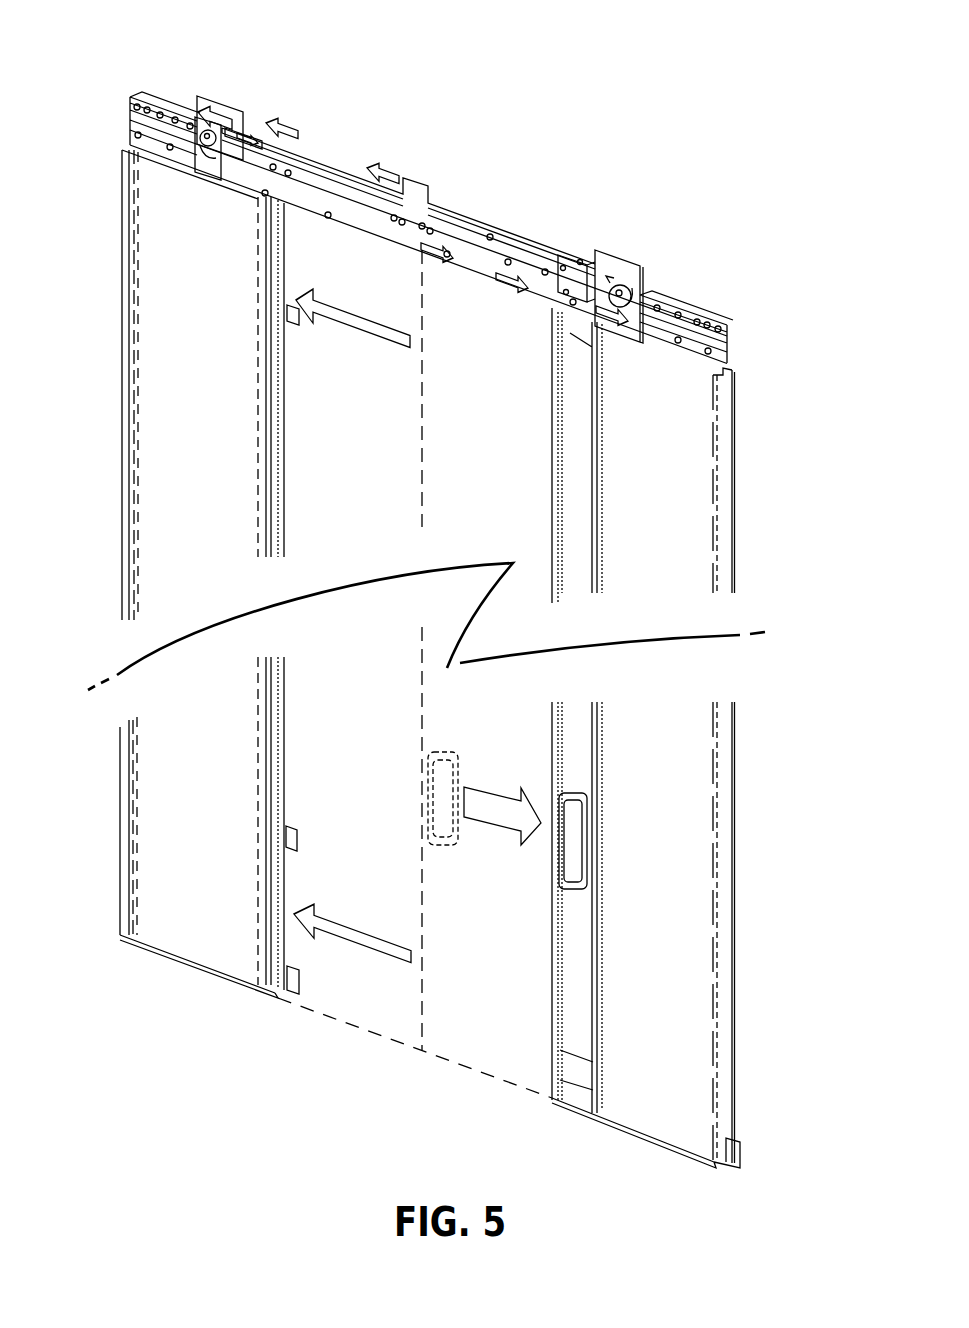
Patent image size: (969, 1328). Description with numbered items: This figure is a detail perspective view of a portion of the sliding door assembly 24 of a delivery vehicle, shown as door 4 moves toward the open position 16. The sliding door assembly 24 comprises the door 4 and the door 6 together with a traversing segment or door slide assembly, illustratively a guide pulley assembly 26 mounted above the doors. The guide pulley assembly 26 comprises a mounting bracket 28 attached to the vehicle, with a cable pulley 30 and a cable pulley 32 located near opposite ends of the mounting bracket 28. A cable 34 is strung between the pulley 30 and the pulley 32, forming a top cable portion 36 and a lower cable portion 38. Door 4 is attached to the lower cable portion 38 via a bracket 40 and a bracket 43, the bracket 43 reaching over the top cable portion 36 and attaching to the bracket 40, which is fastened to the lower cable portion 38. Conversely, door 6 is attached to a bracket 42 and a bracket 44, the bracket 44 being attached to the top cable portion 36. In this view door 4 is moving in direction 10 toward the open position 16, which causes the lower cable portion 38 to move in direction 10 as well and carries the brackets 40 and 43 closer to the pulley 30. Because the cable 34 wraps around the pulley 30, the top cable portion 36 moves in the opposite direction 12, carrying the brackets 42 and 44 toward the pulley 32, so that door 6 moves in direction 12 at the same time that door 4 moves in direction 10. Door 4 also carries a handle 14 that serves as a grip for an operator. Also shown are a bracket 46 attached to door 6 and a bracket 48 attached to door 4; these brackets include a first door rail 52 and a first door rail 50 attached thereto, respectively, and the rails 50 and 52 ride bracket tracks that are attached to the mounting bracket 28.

The door 4 is at (644, 508).
The door 6 is at (183, 357).
The direction 10 is at (433, 255).
The direction 12 is at (215, 100).
The handle 14 is at (569, 797).
The open position 16 is at (388, 1074).
The sliding door assembly 24 is at (80, 484).
The guide pulley assembly 26 is at (515, 127).
The mounting bracket 28 is at (626, 333).
The cable pulley 30 is at (622, 287).
The cable pulley 32 is at (210, 117).
The cable 34 is at (253, 170).
The top cable portion 36 is at (325, 158).
The lower cable portion 38 is at (327, 197).
The bracket 40 is at (575, 287).
The bracket 42 is at (247, 140).
The bracket 43 is at (577, 262).
The bracket 44 is at (240, 140).
The bracket 46 is at (120, 130).
The bracket 48 is at (737, 360).
The first door rail 50 is at (722, 315).
The first door rail 52 is at (125, 100).